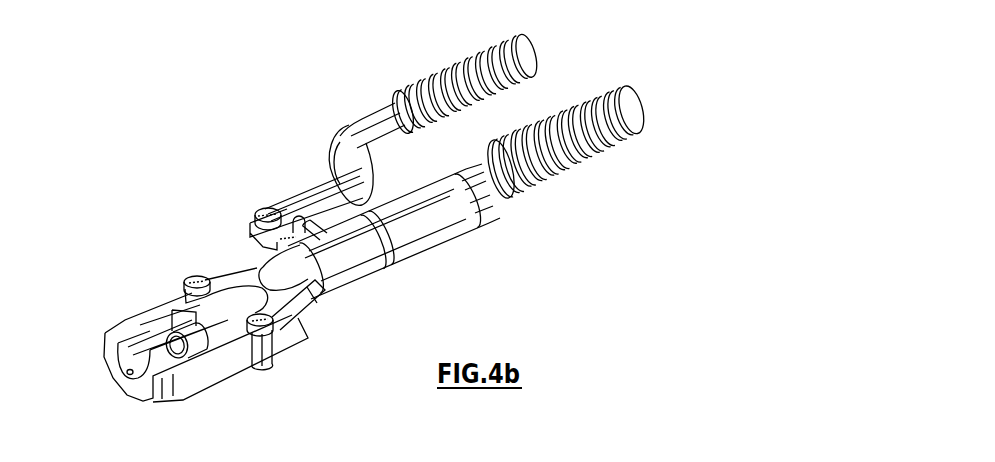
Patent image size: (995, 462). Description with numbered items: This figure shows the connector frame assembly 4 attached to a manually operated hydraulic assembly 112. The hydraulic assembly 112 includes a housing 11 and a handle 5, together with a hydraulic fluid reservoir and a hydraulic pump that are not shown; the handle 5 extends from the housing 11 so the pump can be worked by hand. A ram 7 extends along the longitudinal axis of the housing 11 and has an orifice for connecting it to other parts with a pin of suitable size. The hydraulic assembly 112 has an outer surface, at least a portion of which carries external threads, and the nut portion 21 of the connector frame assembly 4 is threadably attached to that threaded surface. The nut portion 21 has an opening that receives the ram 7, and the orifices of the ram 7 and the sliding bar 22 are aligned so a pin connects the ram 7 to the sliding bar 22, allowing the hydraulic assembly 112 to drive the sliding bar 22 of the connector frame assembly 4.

The connector frame assembly 4 is at (296, 387).
The handle 5 is at (447, 68).
The ram 7 is at (237, 312).
The housing 11 is at (432, 230).
The nut portion 21 is at (318, 298).
The sliding bar 22 is at (180, 322).
The hydraulic assembly 112 is at (506, 228).